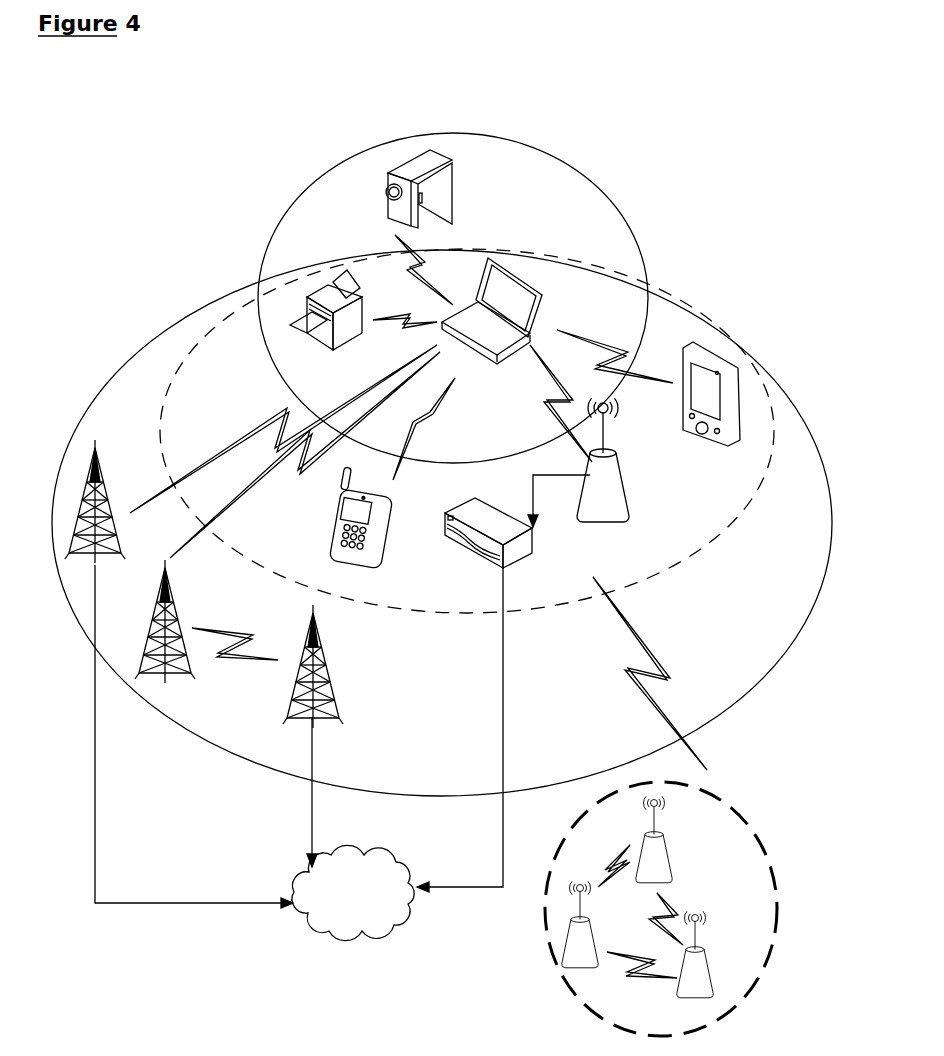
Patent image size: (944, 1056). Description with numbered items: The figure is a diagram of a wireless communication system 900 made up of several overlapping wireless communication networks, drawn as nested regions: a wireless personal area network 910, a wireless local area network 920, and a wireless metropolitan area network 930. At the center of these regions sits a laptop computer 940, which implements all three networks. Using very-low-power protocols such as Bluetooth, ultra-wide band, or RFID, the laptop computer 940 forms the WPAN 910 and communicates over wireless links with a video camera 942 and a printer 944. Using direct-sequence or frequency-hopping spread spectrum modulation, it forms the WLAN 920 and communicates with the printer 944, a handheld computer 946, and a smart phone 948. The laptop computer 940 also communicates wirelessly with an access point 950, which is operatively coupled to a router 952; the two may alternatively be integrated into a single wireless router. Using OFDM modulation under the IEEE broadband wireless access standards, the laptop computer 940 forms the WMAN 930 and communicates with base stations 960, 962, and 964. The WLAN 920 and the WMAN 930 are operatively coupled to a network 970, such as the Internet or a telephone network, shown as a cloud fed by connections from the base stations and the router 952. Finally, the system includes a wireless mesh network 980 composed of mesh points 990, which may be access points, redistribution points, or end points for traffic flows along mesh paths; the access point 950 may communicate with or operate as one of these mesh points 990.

The wireless communication system 900 is at (684, 163).
The wireless personal area network (WPAN) 910 is at (255, 268).
The wireless local area network (WLAN) 920 is at (200, 340).
The wireless metropolitan area network (WMAN) 930 is at (135, 350).
The laptop computer 940 is at (536, 252).
The video camera 942 is at (452, 200).
The printer 944 is at (356, 336).
The handheld computer 946 is at (712, 450).
The smart phone 948 is at (380, 563).
The access point (AP) 950 is at (618, 522).
The router 952 is at (505, 558).
The base station 960 is at (100, 444).
The base station 962 is at (178, 612).
The base station 964 is at (336, 676).
The network 970 is at (408, 862).
The wireless mesh network 980 is at (750, 832).
The mesh points (MPs) 990 is at (693, 885).